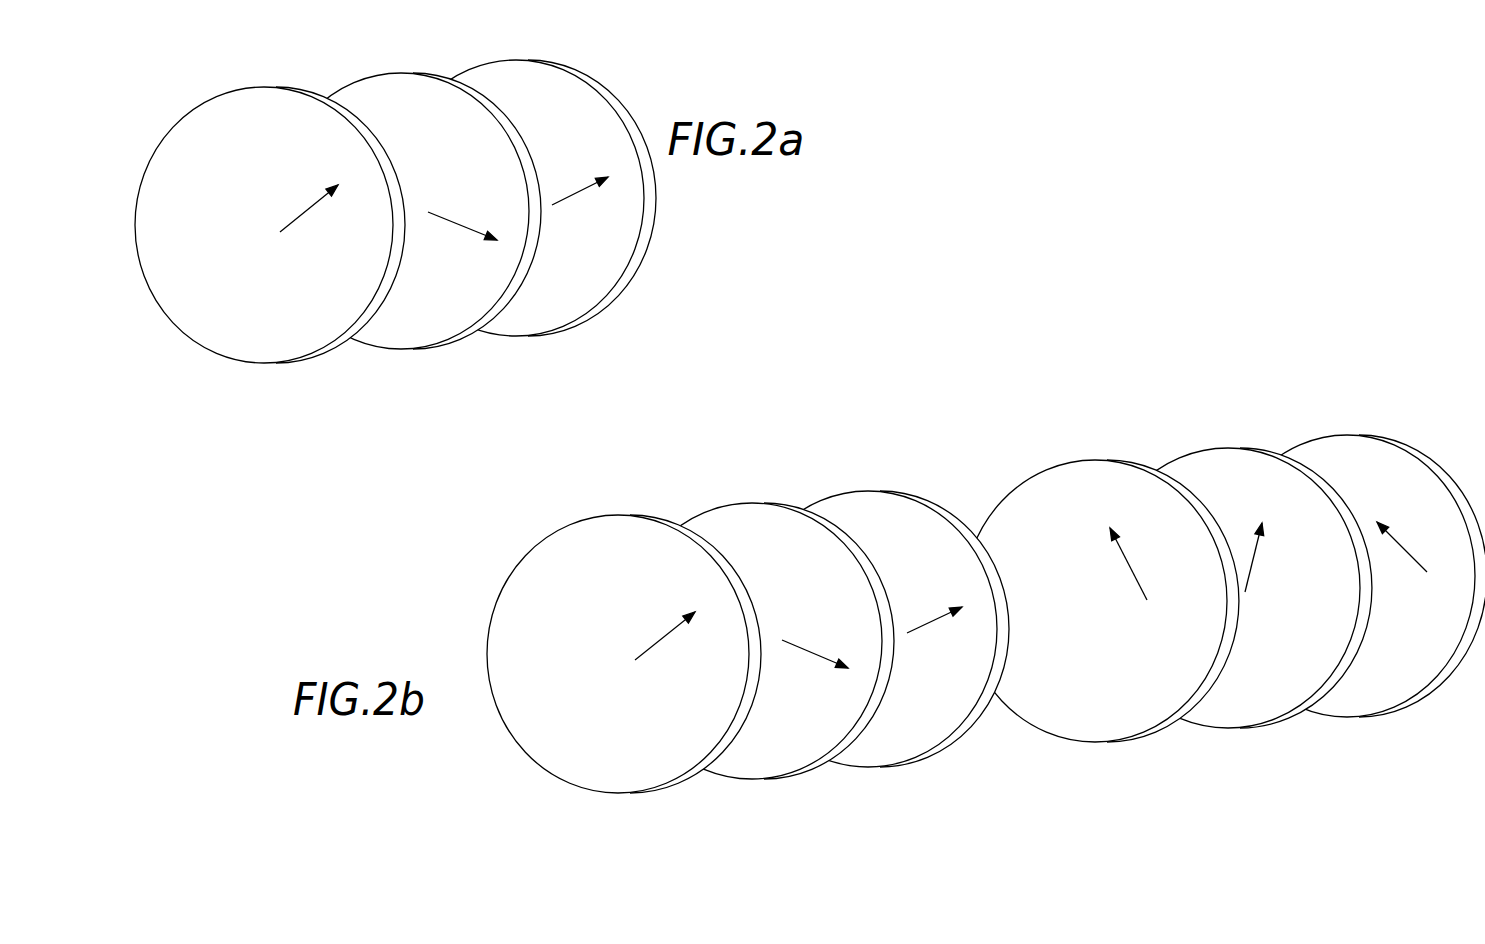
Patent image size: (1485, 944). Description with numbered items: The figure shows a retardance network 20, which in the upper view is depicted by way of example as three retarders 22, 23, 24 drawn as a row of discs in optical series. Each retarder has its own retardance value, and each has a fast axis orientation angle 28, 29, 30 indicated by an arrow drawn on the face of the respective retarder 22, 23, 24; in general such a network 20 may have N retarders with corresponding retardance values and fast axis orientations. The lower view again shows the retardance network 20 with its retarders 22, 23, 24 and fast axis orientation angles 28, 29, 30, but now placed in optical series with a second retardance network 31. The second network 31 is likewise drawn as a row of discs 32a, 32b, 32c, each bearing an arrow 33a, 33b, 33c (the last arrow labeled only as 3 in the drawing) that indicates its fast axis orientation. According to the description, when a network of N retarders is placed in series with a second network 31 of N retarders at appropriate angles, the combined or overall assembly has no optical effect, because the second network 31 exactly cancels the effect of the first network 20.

In FIG. 2a, the retardance network 20 is at (395, 203).
In FIG. 2b, the retardance network 20 is at (748, 631).
In FIG. 2a, the retarder 22 is at (266, 364).
In FIG. 2b, the retarder 22 is at (613, 793).
In FIG. 2a, the retarder 23 is at (414, 350).
In FIG. 2b, the retarder 23 is at (754, 779).
In FIG. 2a, the retarder 24 is at (532, 337).
In FIG. 2b, the retarder 24 is at (880, 767).
In FIG. 2a, the fast axis orientation angle 28 is at (317, 200).
In FIG. 2b, the fast axis orientation angle 28 is at (673, 630).
In FIG. 2a, the fast axis orientation angle 29 is at (455, 221).
In FIG. 2b, the fast axis orientation angle 29 is at (807, 650).
In FIG. 2a, the fast axis orientation angle 30 is at (581, 190).
In FIG. 2b, the fast axis orientation angle 30 is at (939, 618).
In FIG. 2b, the second retardance network 31 is at (1224, 581).
In FIG. 2b, the first disc of second stack 32a is at (1091, 742).
In FIG. 2b, the second disc of second stack 32b is at (1227, 728).
In FIG. 2b, the third disc of second stack 32c is at (1347, 717).
In FIG. 2b, the rotation direction arrow of disc 32a 33a is at (1121, 553).
In FIG. 2b, the rotation direction arrow of disc 32b 33b is at (1257, 553).
In FIG. 2b, the rotation direction arrow of disc 32c 33c is at (1403, 547).
In FIG. 2b, the rotation direction arrow of disc 32c (partially visible numeral) 3 is at (1403, 548).